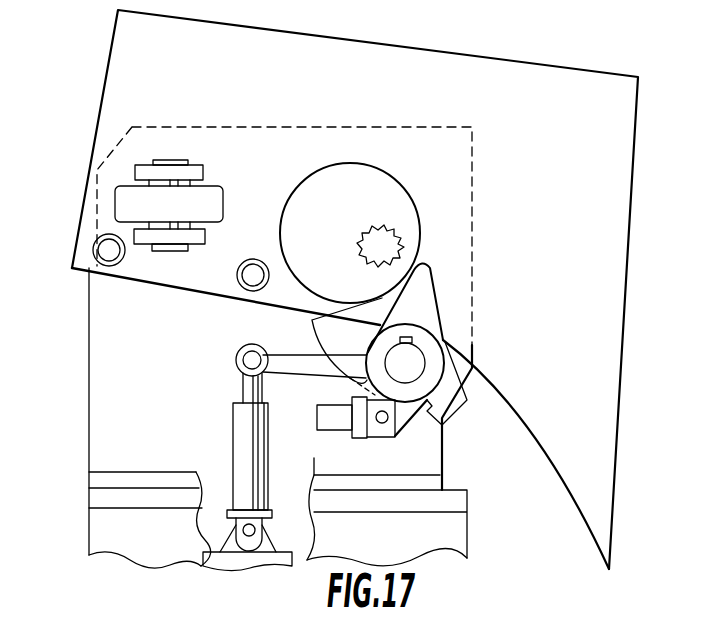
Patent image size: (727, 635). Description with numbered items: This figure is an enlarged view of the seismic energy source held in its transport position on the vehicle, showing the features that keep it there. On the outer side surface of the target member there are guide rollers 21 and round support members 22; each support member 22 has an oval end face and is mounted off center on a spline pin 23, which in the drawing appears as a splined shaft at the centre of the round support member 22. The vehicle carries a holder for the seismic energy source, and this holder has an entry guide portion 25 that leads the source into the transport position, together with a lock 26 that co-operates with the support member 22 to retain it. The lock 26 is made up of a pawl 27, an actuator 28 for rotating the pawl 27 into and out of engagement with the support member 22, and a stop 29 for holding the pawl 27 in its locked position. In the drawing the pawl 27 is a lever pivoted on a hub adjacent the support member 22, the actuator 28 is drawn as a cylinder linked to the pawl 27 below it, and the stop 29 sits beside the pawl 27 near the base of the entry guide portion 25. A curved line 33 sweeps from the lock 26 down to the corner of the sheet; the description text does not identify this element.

The guide roller 21 is at (199, 203).
The round support member 22 is at (380, 188).
The spline pin 23 is at (387, 227).
The entry guide portion 25 is at (108, 340).
The lock 26 is at (448, 331).
The pawl 27 is at (422, 275).
The actuator 28 is at (242, 428).
The stop 29 is at (357, 438).
The sheet web 33 is at (585, 466).